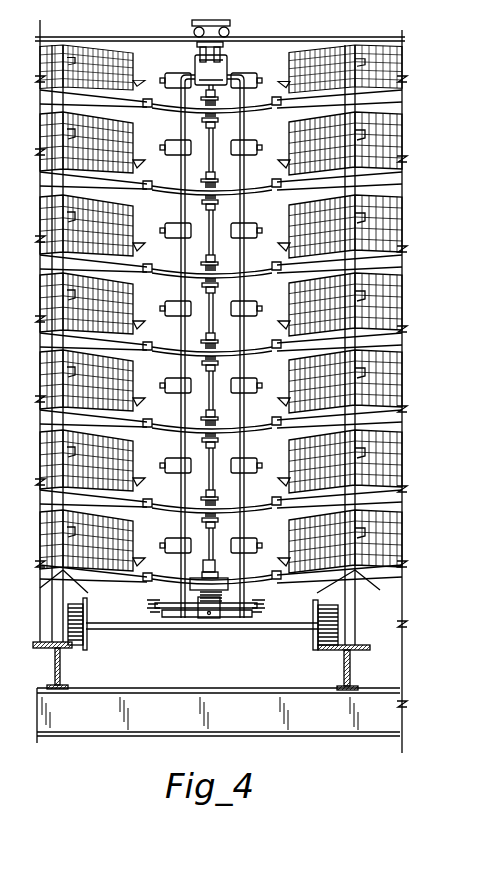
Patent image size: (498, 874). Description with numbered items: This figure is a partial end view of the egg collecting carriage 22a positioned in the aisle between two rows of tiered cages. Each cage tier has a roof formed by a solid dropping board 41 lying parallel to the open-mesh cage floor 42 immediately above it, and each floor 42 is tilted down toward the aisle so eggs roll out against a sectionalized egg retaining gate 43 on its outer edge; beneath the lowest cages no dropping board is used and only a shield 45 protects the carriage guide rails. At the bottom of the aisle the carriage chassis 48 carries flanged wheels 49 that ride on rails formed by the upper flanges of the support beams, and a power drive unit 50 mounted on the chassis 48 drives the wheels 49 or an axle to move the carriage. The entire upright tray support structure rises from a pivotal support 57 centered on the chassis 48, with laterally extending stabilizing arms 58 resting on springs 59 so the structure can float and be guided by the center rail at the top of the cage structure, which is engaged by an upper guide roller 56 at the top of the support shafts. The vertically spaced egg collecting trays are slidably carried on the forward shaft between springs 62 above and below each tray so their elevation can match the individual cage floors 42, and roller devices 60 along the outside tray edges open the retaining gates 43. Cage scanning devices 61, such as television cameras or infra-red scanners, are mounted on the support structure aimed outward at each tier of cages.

The egg collecting carriage 22a is at (183, 636).
The dropping board 41 is at (130, 197).
The cage floor 42 is at (146, 185).
The egg retaining gate 43 is at (272, 188).
The shield 45 is at (90, 592).
The carriage chassis 48 is at (238, 626).
The flanged wheels 49 is at (75, 650).
The power drive unit 50 is at (193, 575).
The upper guide roller 56 is at (232, 58).
The pivotal support 57 is at (210, 617).
The stabilizing arms 58 is at (172, 603).
The springs 59 is at (156, 609).
The roller devices 60 is at (137, 350).
The cage scanning devices 61 is at (176, 76).
The springs 62 is at (244, 246).